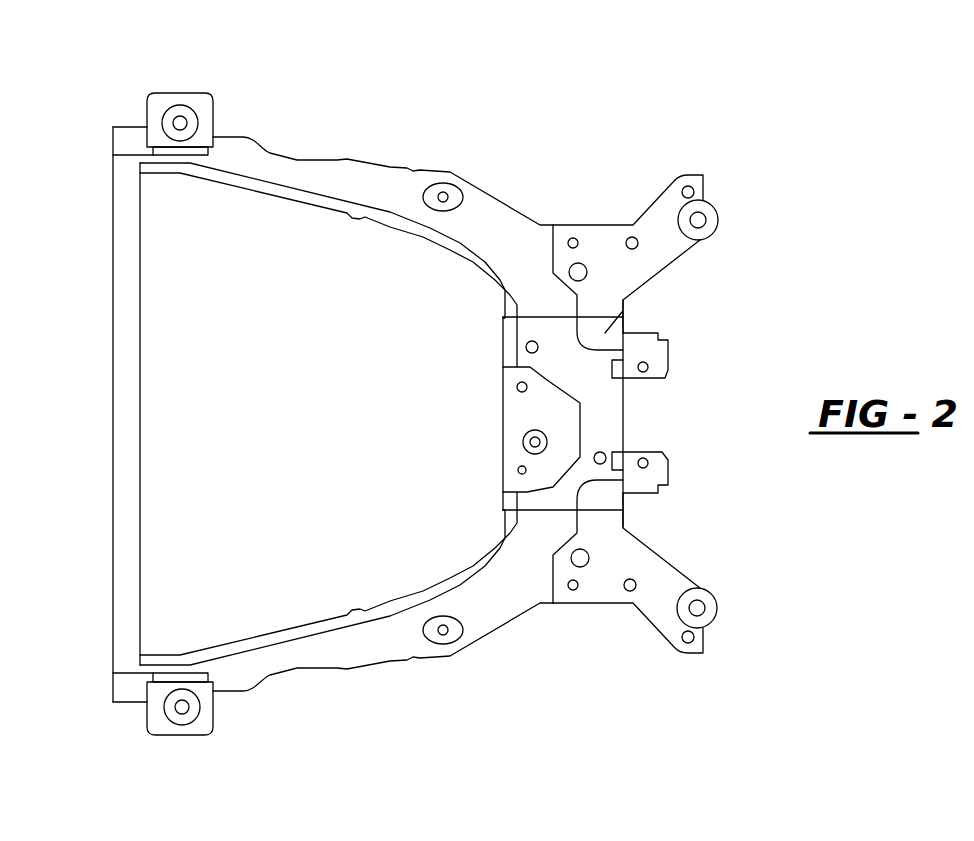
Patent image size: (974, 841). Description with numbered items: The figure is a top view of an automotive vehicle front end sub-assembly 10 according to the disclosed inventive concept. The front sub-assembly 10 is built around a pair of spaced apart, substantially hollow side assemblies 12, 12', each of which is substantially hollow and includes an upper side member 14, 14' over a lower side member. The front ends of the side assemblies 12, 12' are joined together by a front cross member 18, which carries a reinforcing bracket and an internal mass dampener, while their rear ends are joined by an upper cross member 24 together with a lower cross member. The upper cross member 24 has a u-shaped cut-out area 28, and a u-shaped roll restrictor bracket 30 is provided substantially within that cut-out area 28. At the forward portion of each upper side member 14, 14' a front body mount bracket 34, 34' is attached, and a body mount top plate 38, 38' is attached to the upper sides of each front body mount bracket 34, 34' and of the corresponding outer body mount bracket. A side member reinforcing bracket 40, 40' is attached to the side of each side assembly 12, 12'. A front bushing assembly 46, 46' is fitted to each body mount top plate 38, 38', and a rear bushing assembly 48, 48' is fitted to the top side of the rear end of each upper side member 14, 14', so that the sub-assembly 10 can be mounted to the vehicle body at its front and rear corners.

The front sub-assembly 10 is at (648, 145).
The side assembly 12 is at (383, 664).
The side assembly 12' is at (383, 165).
The upper side member 14 is at (596, 580).
The upper side member 14' is at (597, 250).
The front cross member 18 is at (128, 402).
The upper cross member 24 is at (624, 309).
The u-shaped cut-out area 28 is at (518, 388).
The u-shaped roll restrictor bracket 30 is at (523, 430).
The front body mount bracket 34 is at (181, 641).
The front body mount bracket 34' is at (180, 190).
The body mount top plate 38 is at (194, 734).
The body mount top plate 38' is at (195, 94).
The side member reinforcing bracket 40 is at (459, 664).
The side member reinforcing bracket 40' is at (465, 165).
The front bushing assembly 46 is at (175, 738).
The front bushing assembly 46' is at (174, 91).
The rear bushing assembly 48 is at (713, 633).
The rear bushing assembly 48' is at (717, 197).